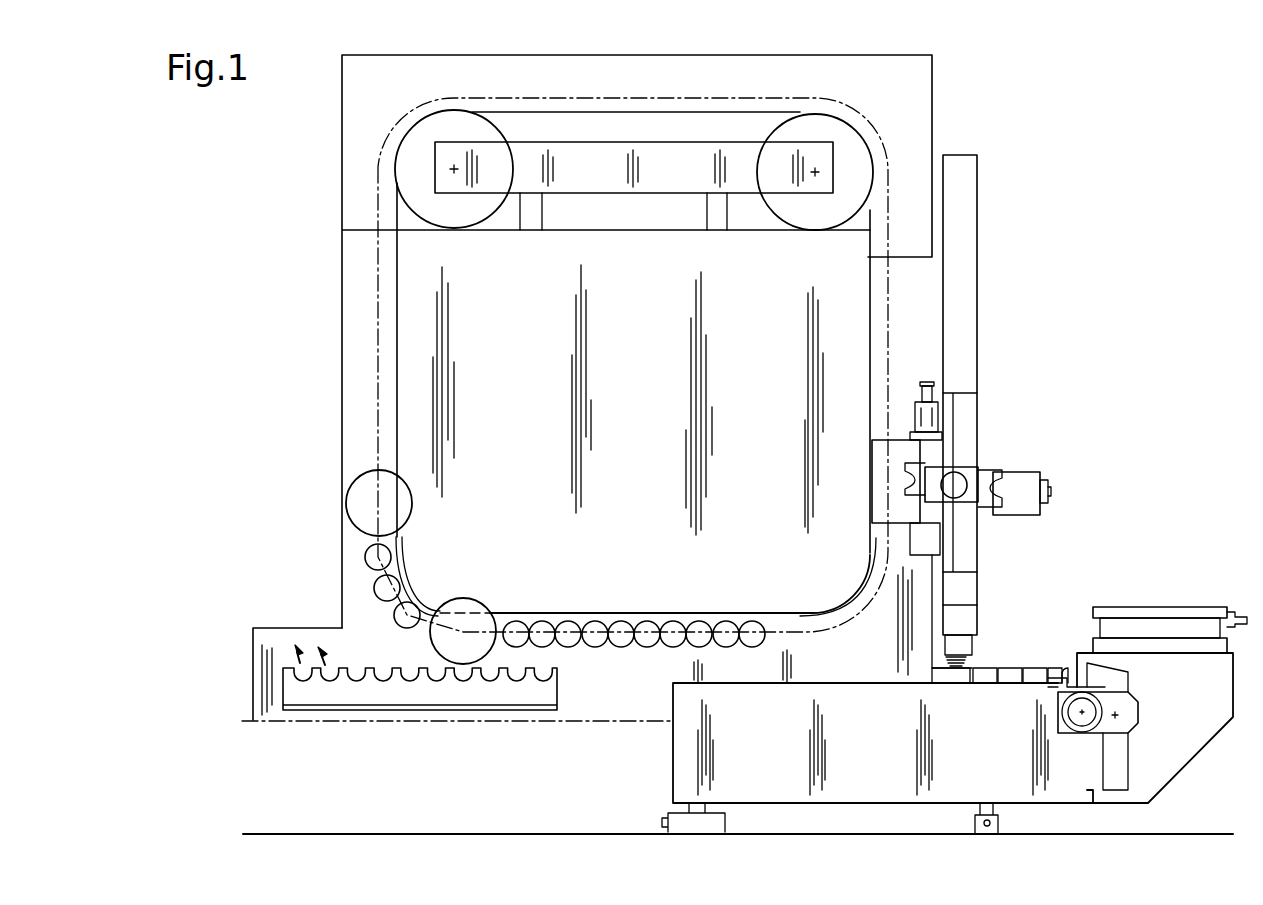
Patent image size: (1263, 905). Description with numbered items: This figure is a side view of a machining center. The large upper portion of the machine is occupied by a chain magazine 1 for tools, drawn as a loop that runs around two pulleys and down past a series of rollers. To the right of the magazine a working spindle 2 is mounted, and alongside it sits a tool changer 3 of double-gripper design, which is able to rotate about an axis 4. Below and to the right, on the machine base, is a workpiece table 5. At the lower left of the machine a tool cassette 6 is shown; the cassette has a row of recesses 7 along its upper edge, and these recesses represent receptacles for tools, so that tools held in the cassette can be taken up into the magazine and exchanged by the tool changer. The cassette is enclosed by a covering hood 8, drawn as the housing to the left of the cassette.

The chain magazine 1 is at (878, 346).
The working spindle 2 is at (1023, 480).
The tool changer 3 is at (967, 472).
The axis 4 is at (957, 489).
The workpiece table 5 is at (1183, 615).
The tool cassette 6 is at (290, 672).
The recesses 7 is at (322, 657).
The covering hood 8 is at (262, 687).